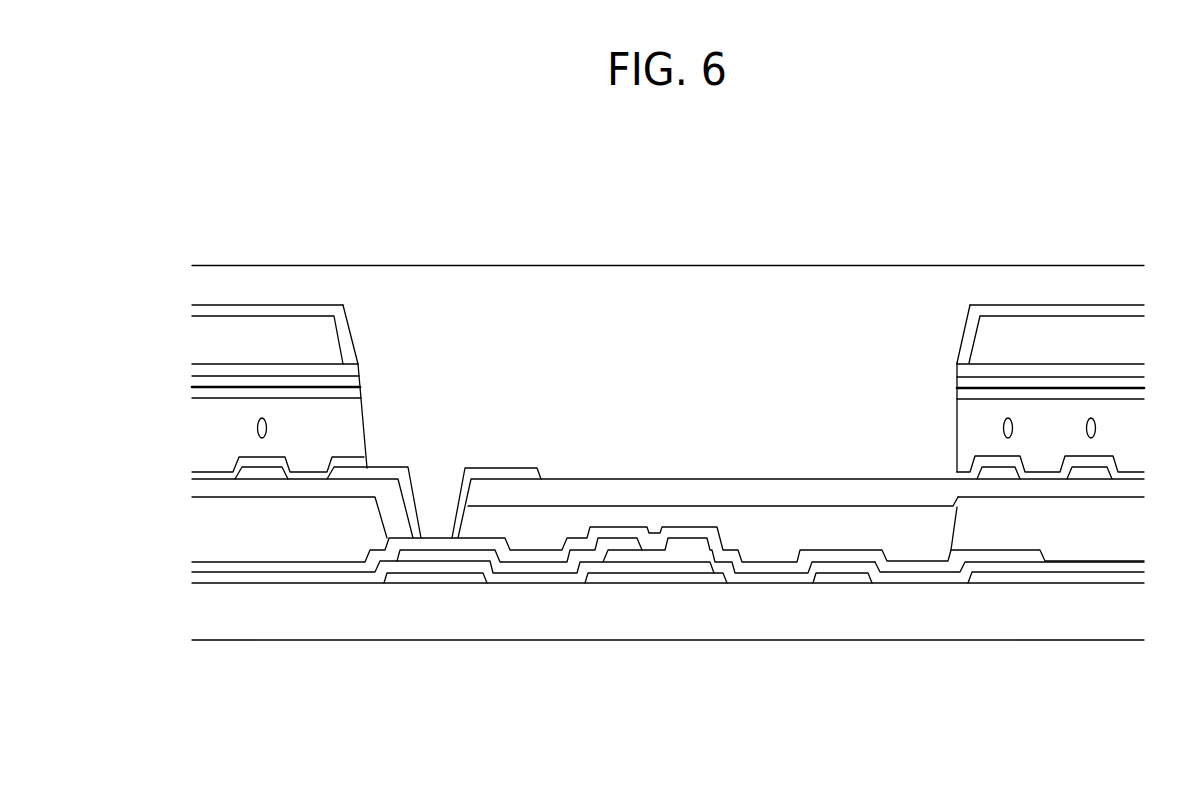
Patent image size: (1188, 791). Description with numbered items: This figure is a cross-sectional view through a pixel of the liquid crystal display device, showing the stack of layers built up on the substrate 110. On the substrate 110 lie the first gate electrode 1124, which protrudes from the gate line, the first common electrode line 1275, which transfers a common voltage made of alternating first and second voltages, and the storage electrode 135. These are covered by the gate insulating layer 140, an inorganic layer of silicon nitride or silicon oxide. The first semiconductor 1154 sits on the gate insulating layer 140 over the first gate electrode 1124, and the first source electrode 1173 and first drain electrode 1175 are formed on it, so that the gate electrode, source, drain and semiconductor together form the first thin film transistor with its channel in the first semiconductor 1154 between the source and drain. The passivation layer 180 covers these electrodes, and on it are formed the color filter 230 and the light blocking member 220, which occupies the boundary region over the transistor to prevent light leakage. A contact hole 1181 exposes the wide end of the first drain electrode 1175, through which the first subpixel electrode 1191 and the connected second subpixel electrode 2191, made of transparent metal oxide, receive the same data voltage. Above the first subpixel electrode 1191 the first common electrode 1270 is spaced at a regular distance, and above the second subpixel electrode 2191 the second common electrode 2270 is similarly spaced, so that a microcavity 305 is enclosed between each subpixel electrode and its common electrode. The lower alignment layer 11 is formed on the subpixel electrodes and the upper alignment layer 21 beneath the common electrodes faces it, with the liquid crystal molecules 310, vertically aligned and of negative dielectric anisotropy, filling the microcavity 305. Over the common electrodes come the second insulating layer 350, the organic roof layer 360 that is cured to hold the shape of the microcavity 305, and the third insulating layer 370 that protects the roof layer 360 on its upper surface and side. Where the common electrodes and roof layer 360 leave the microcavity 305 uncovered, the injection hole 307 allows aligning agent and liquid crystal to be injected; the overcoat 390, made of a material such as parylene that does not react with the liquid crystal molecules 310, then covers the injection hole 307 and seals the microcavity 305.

The lower alignment layer 11 is at (221, 474).
The upper alignment layer 21 is at (327, 392).
The substrate 110 is at (1092, 618).
The storage electrode 135 is at (460, 577).
The gate insulating layer 140 is at (890, 578).
The passivation layer 180 is at (920, 563).
The light blocking member 220 is at (767, 540).
The color filter 230 is at (280, 540).
The microcavity 305 is at (337, 433).
The injection hole 307 is at (364, 413).
The liquid crystal molecules 310 is at (1002, 428).
The second insulating layer 350 is at (262, 370).
The roof layer 360 is at (238, 330).
The third insulating layer 370 is at (226, 310).
The overcoat 390 is at (686, 290).
The first gate electrode 1124 is at (670, 577).
The first semiconductor 1154 is at (647, 555).
The first source electrode 1173 is at (688, 543).
The first drain electrode 1175 is at (530, 567).
The contact hole 1181 is at (461, 518).
The first subpixel electrode 1191 is at (265, 474).
The first common electrode 1270 is at (297, 380).
The first common electrode line 1275 is at (838, 577).
The second subpixel electrode 2191 is at (1000, 473).
The second common electrode 2270 is at (1082, 382).